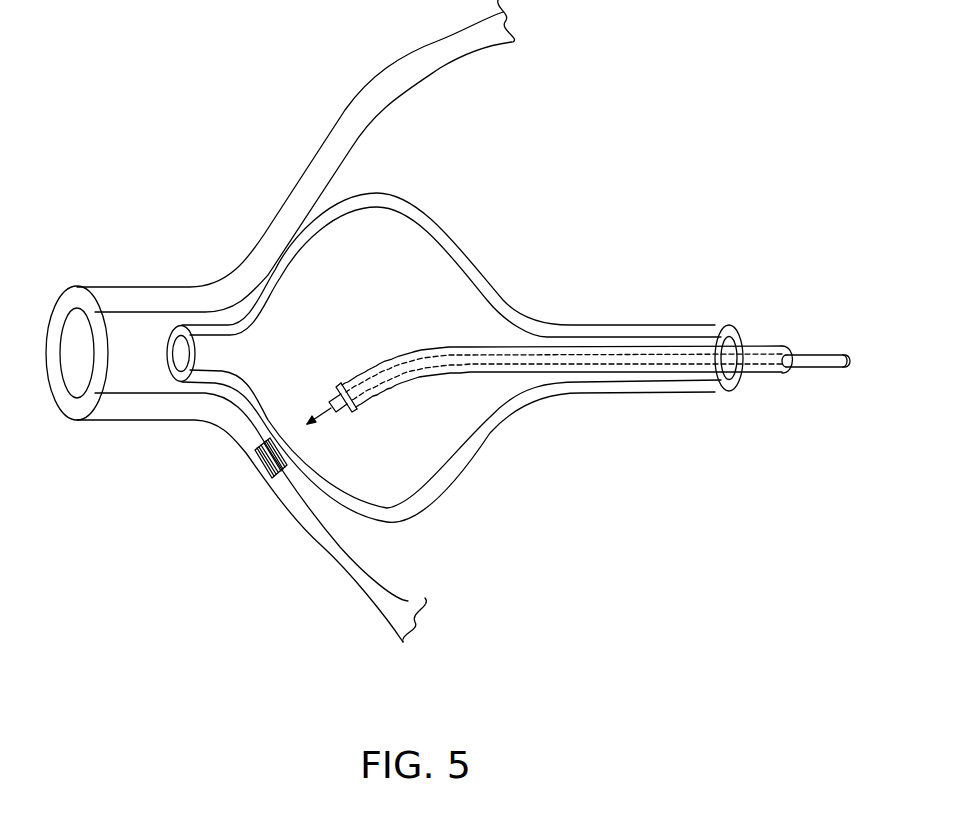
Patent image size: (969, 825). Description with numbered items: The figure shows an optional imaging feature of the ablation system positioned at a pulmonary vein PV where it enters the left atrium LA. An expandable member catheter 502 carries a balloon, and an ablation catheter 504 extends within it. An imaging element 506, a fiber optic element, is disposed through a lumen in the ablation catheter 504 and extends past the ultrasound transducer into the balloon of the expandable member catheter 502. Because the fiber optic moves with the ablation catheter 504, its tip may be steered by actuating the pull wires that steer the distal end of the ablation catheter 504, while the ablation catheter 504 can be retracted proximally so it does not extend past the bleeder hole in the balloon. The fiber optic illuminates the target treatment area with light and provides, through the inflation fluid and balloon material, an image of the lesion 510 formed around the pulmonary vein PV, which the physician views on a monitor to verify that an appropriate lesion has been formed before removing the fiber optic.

The left atrium LA is at (430, 100).
The pulmonary vein PV is at (119, 407).
The expandable member catheter 502 is at (606, 325).
The ablation catheter 504 is at (456, 374).
The imaging element 506 is at (335, 413).
The lesion 510 is at (271, 479).